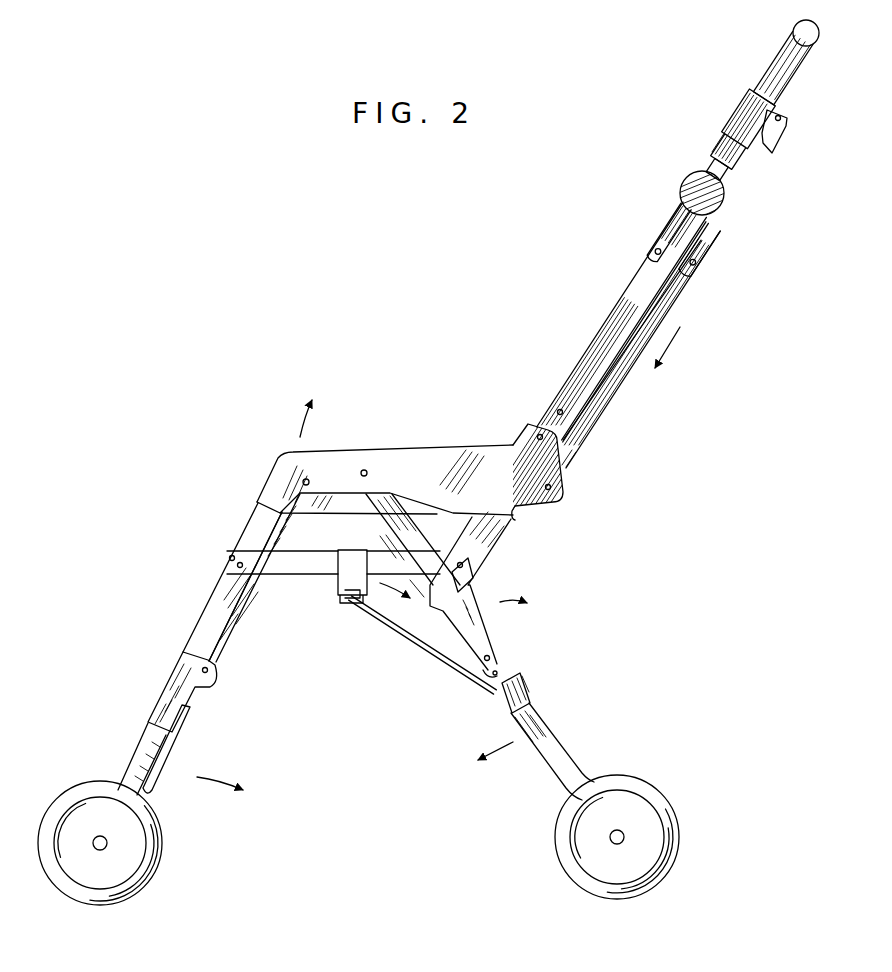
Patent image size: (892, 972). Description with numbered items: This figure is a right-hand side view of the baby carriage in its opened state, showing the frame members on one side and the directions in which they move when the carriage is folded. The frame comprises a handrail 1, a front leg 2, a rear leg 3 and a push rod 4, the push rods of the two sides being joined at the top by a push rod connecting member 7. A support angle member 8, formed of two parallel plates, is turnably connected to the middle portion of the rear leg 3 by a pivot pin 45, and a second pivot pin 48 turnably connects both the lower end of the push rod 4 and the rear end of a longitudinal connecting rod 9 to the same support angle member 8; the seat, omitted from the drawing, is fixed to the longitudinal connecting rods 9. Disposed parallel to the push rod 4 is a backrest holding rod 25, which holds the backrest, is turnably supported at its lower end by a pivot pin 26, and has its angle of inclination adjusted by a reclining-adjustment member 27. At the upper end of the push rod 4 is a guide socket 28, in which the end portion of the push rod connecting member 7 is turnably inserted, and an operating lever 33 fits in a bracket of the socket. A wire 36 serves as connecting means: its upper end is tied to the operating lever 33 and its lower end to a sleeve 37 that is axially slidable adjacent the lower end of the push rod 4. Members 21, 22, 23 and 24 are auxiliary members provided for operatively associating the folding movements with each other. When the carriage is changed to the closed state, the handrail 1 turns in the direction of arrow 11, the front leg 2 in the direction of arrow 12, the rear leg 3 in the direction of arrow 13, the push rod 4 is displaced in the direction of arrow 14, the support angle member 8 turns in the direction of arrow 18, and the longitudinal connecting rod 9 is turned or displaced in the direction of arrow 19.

The handrail 1 is at (400, 450).
The front leg 2 is at (205, 627).
The rear leg 3 is at (552, 738).
The push rod 4 is at (632, 295).
The push rod connecting member 7 is at (780, 67).
The support angle member 8 is at (498, 553).
The longitudinal connecting rod 9 is at (288, 563).
The arrow 11 is at (298, 437).
The arrow 12 is at (207, 778).
The arrow 13 is at (493, 758).
The arrow 14 is at (667, 350).
The arrow 18 is at (490, 602).
The arrow 19 is at (387, 585).
The auxiliary member 21 is at (226, 636).
The auxiliary member 22 is at (167, 700).
The auxiliary member 23 is at (172, 750).
The auxiliary member 24 is at (433, 657).
The backrest holding rod 25 is at (670, 300).
The pivot pin 26 is at (551, 488).
The reclining-adjustment member 27 is at (690, 185).
The guide socket 28 is at (742, 113).
The operating lever 33 is at (773, 150).
The wire 36 is at (590, 390).
The sleeve 37 is at (516, 524).
The pivot pin 45 is at (490, 658).
The pivot pin 48 is at (464, 565).